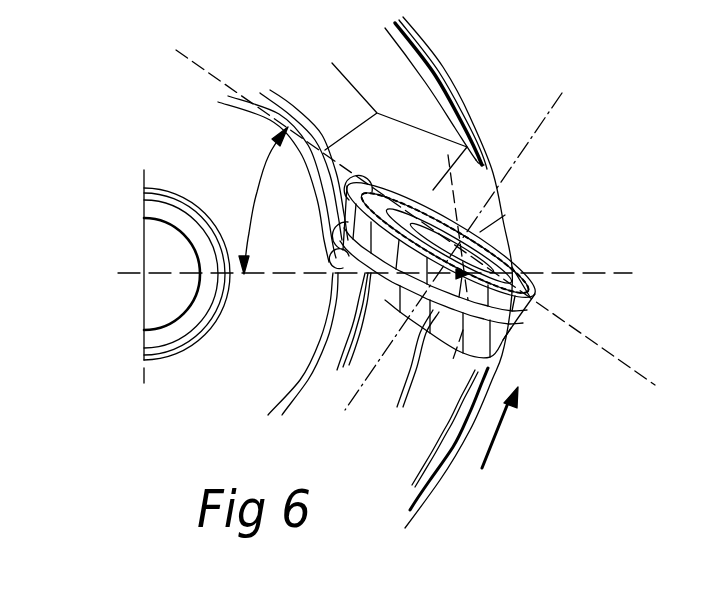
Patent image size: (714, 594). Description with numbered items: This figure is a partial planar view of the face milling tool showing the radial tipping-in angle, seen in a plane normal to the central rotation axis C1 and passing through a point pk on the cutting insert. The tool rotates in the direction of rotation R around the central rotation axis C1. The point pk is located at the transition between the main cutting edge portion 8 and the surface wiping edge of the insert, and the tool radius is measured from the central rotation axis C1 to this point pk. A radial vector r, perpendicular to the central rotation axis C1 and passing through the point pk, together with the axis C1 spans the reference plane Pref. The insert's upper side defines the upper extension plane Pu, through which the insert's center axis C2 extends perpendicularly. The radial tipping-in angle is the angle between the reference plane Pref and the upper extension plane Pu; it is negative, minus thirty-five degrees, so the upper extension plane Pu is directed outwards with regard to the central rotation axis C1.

The central rotation axis C1 is at (144, 266).
The center axis C2 is at (546, 109).
The main cutting edge portion 8 is at (503, 320).
The radial vector r is at (273, 277).
The reference plane Pref is at (599, 273).
The upper extension plane Pu is at (530, 292).
The point pk is at (466, 250).
The direction of rotation R is at (502, 427).